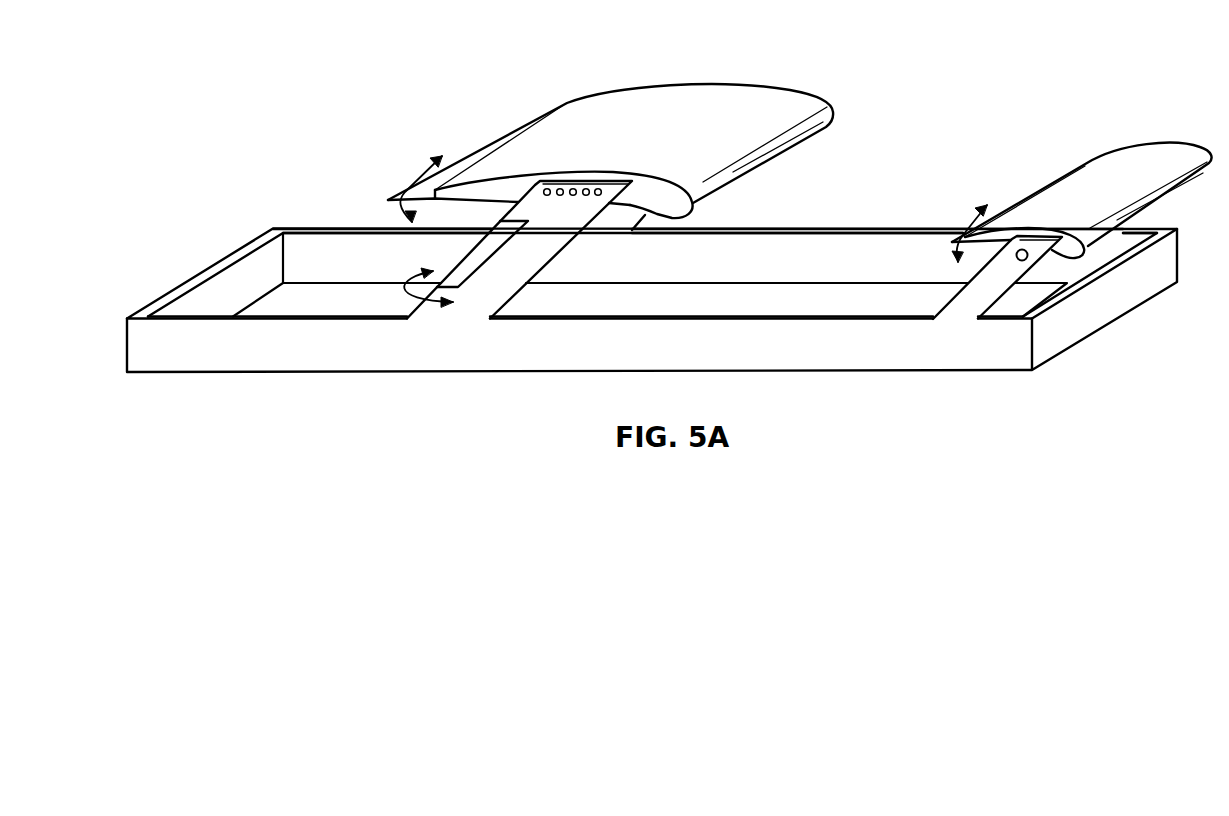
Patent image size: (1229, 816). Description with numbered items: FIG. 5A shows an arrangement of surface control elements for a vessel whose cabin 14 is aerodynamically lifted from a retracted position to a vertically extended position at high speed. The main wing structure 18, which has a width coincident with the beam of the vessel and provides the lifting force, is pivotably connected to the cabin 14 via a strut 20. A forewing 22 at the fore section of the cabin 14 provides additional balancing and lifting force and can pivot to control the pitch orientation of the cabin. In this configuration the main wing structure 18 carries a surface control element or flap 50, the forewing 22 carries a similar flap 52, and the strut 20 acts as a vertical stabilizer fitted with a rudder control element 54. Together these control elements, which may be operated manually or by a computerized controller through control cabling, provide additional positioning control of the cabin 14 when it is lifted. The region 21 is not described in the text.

The cabin 14 is at (845, 227).
The main wing structure 18 is at (767, 97).
The strut 20 is at (572, 243).
The cavity 21 is at (732, 310).
The forewing 22 is at (1122, 163).
The flap 50 is at (512, 132).
The flap 52 is at (1052, 188).
The rudder control element 54 is at (460, 270).